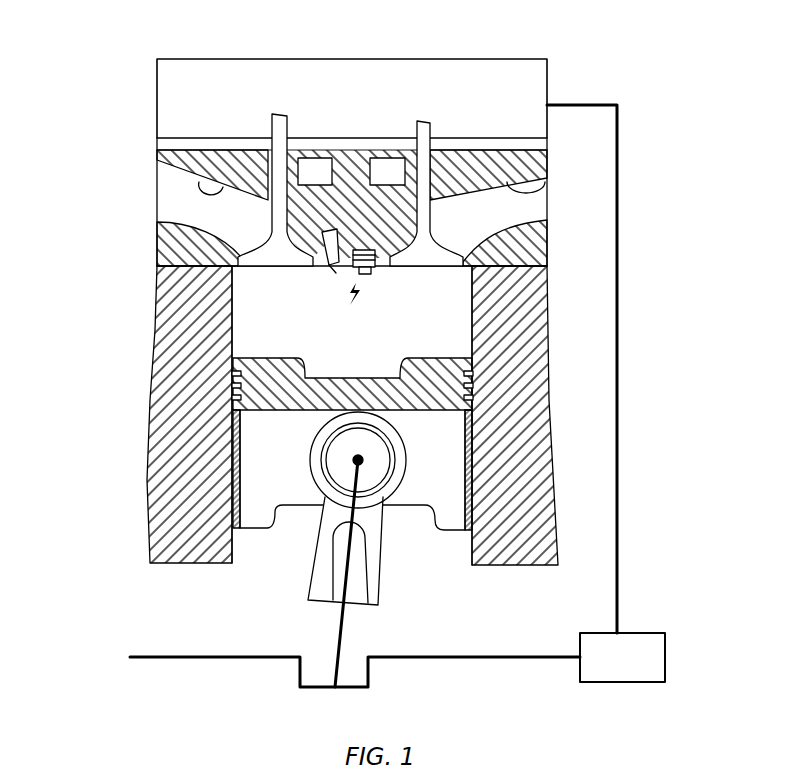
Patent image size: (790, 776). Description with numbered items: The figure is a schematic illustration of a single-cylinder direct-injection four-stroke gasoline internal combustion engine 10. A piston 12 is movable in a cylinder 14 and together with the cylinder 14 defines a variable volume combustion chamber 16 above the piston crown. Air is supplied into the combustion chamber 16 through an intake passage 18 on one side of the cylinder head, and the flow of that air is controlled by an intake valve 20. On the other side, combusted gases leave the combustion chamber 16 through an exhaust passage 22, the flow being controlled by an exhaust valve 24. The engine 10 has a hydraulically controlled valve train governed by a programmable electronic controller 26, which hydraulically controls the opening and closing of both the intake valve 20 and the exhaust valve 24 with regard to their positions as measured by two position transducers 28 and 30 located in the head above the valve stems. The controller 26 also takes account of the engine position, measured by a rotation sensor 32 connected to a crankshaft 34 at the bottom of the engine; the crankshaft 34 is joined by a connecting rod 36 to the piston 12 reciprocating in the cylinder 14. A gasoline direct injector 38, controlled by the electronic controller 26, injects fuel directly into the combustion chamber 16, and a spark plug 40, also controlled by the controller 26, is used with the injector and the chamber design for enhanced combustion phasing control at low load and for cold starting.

The internal combustion engine 10 is at (130, 84).
The piston 12 is at (268, 355).
The cylinder 14 is at (236, 353).
The combustion chamber 16 is at (457, 342).
The intake passage 18 is at (175, 174).
The intake valve 20 is at (278, 262).
The exhaust passage 22 is at (538, 185).
The exhaust valve 24 is at (428, 260).
The electronic controller 26 is at (370, 113).
The position transducer 28 is at (313, 168).
The position transducer 30 is at (387, 170).
The rotation sensor 32 is at (640, 637).
The crankshaft 34 is at (295, 675).
The connecting rod 36 is at (322, 564).
The gasoline direct injector 38 is at (327, 267).
The spark plug 40 is at (378, 270).